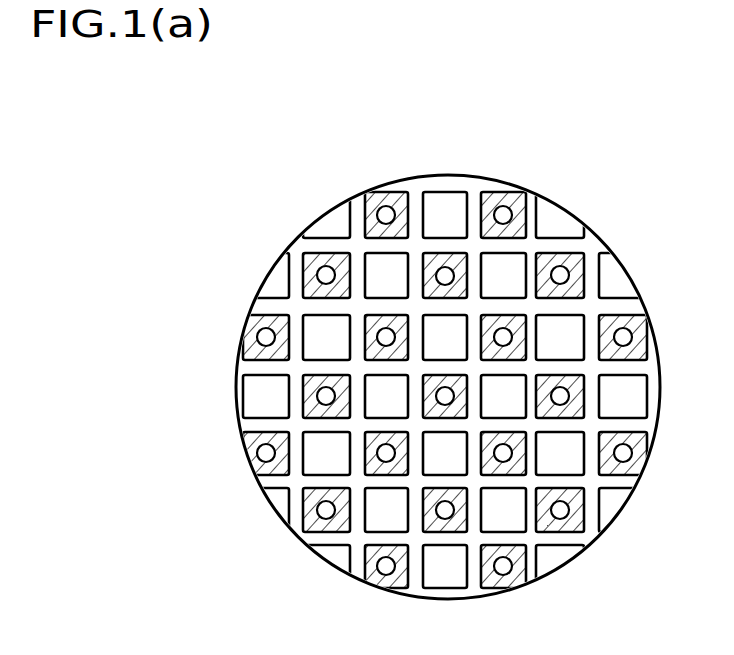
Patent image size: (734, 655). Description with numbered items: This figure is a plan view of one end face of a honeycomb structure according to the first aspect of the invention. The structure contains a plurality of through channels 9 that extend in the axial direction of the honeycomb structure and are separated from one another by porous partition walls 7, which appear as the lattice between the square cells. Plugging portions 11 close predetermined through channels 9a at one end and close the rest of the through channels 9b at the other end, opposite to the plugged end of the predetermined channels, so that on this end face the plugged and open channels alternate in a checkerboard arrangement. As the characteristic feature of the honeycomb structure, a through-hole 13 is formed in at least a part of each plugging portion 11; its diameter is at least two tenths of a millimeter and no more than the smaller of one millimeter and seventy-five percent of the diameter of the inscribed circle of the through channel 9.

The porous partition wall 7 is at (557, 371).
The through channel 9 is at (152, 253).
The predetermined through channel 9a is at (433, 327).
The rest of through channels 9b is at (402, 362).
The plugging portion 11 is at (430, 259).
The through-hole 13 is at (449, 276).